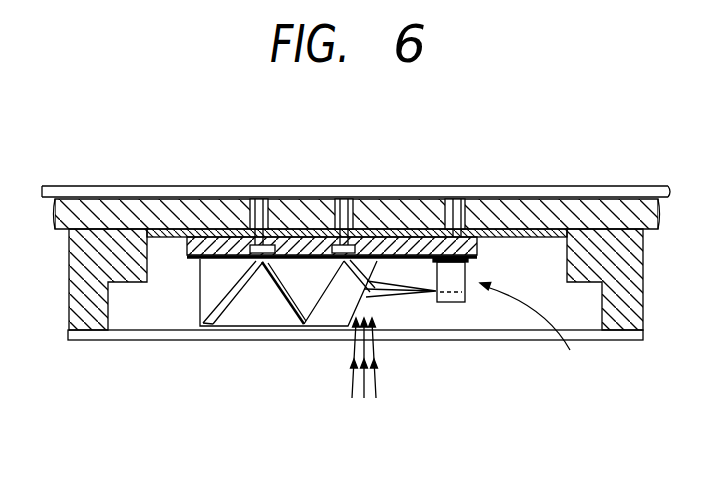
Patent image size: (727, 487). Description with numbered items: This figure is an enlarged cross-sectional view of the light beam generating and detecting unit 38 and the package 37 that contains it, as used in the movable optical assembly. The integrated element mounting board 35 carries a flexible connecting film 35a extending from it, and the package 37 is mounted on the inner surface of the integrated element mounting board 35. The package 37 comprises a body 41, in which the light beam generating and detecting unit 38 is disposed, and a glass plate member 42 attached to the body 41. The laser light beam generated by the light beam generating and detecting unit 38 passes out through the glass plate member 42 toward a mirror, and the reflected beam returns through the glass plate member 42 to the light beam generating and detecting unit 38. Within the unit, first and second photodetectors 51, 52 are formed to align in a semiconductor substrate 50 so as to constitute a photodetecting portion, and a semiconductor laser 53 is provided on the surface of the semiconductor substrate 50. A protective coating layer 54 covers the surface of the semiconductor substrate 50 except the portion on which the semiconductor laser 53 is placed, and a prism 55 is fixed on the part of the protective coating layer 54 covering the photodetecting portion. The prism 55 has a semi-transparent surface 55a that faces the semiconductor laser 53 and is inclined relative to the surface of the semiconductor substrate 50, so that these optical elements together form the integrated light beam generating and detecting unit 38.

The integrated element mounting board 35 is at (162, 205).
The flexible connecting film 35a is at (68, 192).
The package 37 is at (355, 341).
The light beam generating and detecting unit 38 is at (537, 334).
The body 41 is at (95, 328).
The glass plate member 42 is at (160, 335).
The semiconductor substrate 50 is at (476, 244).
The first photodetector 51 is at (362, 237).
The second photodetector 52 is at (235, 198).
The semiconductor laser 53 is at (450, 303).
The protective coating layer 54 is at (190, 258).
The prism 55 is at (263, 310).
The semi-transparent surface 55a is at (380, 268).